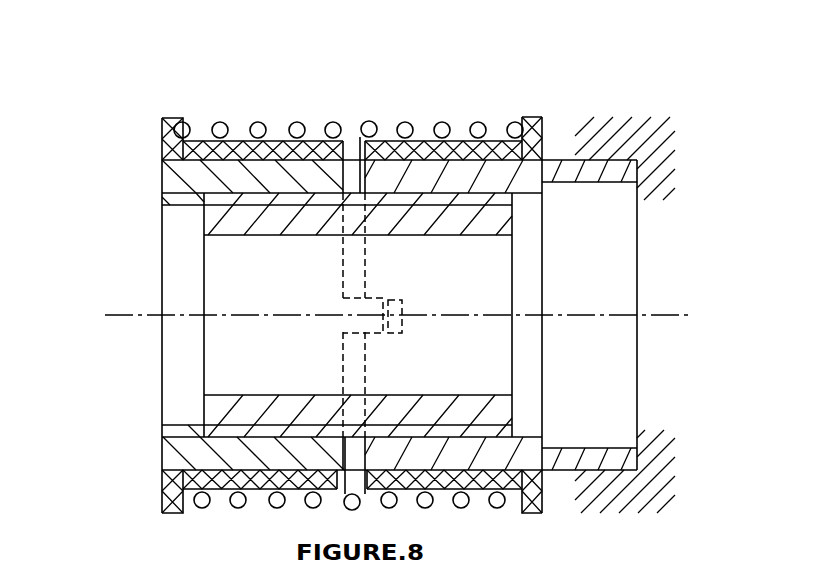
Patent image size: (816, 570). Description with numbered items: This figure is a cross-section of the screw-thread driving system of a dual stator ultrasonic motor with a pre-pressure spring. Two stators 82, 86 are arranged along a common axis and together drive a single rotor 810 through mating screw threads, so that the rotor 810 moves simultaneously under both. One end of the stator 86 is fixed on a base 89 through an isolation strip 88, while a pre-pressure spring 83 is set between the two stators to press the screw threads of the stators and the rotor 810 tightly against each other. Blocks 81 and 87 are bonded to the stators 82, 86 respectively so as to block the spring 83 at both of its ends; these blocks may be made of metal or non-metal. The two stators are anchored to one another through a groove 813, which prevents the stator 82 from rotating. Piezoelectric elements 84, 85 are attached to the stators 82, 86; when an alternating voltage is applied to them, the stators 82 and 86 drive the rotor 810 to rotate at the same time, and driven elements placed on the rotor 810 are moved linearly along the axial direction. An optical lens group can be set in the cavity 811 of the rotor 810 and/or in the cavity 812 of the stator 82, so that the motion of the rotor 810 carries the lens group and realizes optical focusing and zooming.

The block 81 is at (172, 125).
The stator 82 is at (195, 183).
The pre-pressure spring 83 is at (255, 127).
The piezoelectric element 84 is at (318, 153).
The piezoelectric element 85 is at (391, 138).
The stator 86 is at (453, 170).
The block 87 is at (530, 120).
The isolation strip 88 is at (570, 170).
The base 89 is at (648, 147).
The rotor 810 is at (490, 228).
The cavity 811 is at (480, 298).
The cavity 812 is at (185, 383).
The groove 813 is at (360, 310).